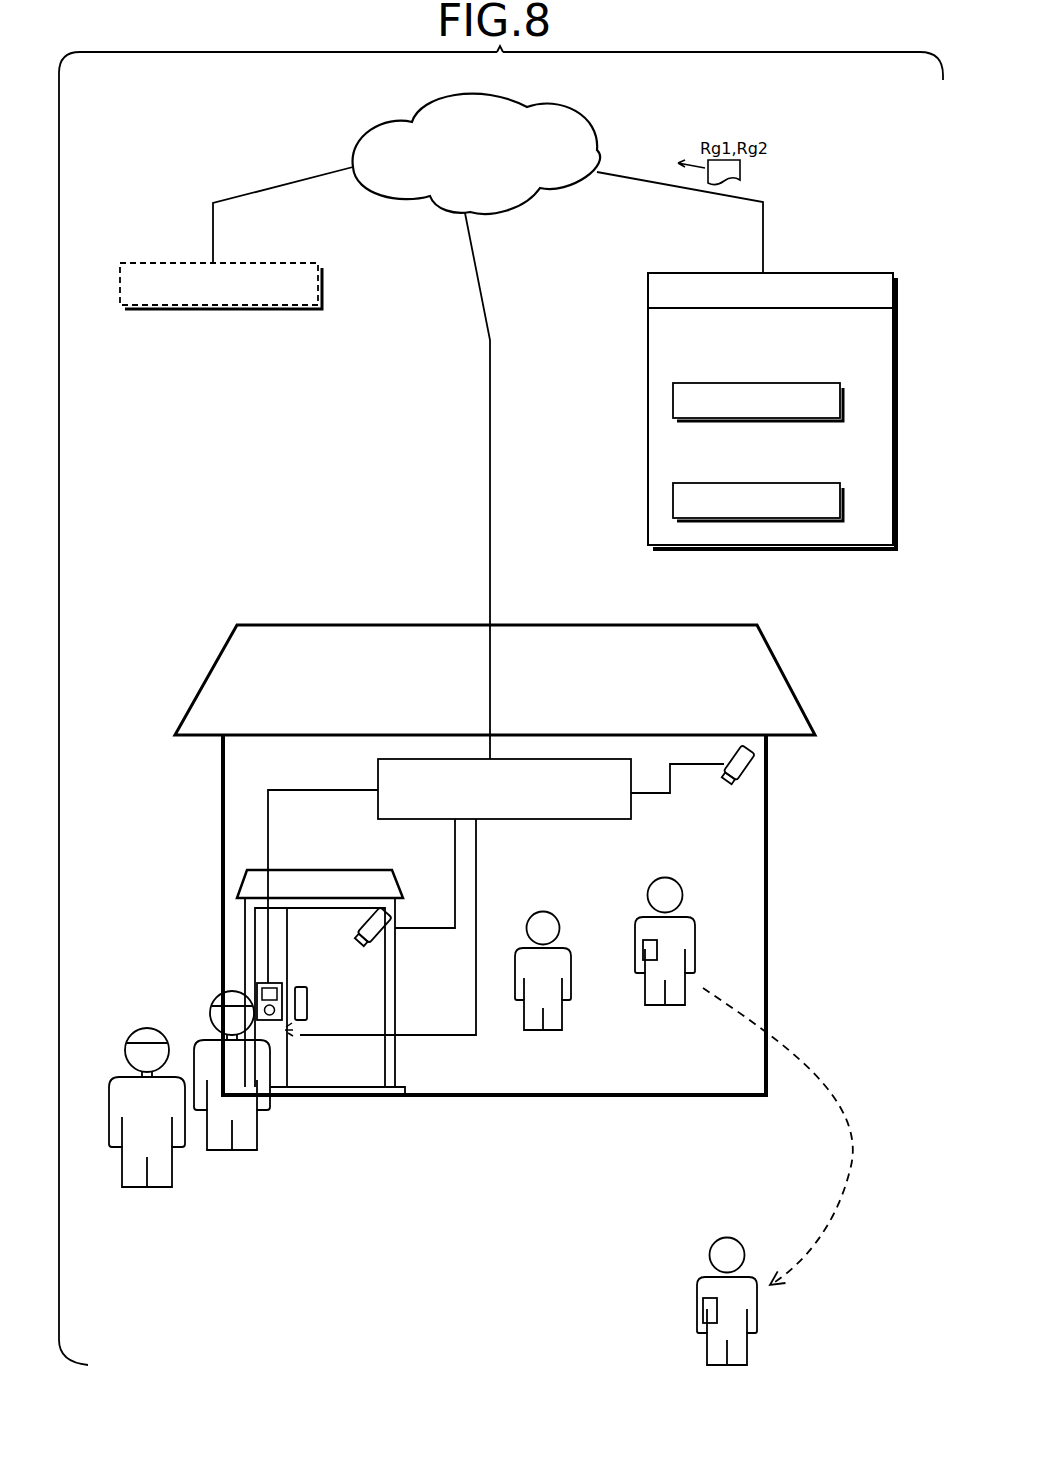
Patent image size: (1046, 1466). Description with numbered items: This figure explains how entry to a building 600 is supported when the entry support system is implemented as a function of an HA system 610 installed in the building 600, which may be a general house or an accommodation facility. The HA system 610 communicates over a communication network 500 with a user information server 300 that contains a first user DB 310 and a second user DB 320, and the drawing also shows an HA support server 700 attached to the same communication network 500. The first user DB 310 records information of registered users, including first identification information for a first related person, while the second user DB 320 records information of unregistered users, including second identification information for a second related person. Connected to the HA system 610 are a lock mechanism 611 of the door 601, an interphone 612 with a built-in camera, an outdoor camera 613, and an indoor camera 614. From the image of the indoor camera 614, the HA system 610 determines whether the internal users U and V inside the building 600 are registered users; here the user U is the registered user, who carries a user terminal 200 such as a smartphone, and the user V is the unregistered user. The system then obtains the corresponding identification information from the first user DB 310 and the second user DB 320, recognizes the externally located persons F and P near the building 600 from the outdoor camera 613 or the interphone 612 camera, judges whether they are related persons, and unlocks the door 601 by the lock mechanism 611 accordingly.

The communication network 500 is at (578, 135).
The HA support server 700 is at (320, 292).
The user information server 300 is at (648, 388).
The first user DB 310 is at (755, 382).
The second user DB 320 is at (755, 482).
The building 600 is at (420, 625).
The HA system 610 is at (566, 757).
The indoor camera 614 is at (748, 782).
The outdoor camera 613 is at (357, 915).
The interphone 612 is at (258, 990).
The door 601 is at (357, 998).
The lock mechanism 611 is at (298, 1042).
The user terminal 200 is at (643, 948).
The externally located person P is at (155, 1190).
The externally located person F is at (237, 1153).
The unregistered user V is at (543, 911).
The registered user U is at (667, 877).